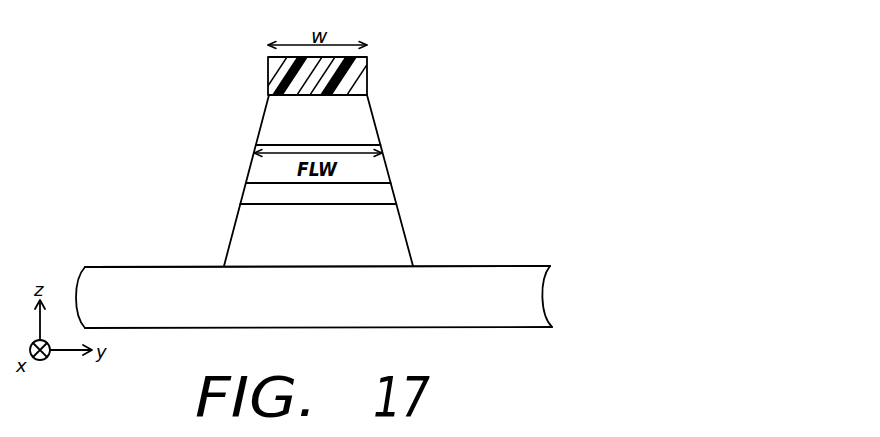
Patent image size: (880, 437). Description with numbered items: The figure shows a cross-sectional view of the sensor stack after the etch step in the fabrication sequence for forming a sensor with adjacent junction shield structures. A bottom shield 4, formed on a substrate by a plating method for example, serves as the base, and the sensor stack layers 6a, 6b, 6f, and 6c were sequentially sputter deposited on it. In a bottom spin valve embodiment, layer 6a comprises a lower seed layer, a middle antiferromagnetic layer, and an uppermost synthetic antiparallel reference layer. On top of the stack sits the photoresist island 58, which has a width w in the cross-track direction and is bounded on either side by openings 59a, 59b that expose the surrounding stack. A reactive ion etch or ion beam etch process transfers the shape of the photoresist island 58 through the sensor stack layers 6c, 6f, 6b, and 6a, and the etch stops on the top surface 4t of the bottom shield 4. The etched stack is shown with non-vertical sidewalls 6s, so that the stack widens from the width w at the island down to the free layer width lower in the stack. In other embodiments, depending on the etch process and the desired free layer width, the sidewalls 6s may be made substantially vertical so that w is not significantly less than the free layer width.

The photoresist island 58 is at (271, 70).
The opening 59a is at (157, 75).
The opening 59b is at (410, 73).
The sensor stack layer 6c is at (362, 121).
The sensor stack layer 6f is at (378, 167).
The sensor stack layer 6b is at (381, 194).
The sensor stack layer 6a is at (390, 233).
The sidewalls 6s is at (246, 199).
The top surface of bottom shield 4t is at (118, 267).
The bottom shield 4 is at (528, 297).